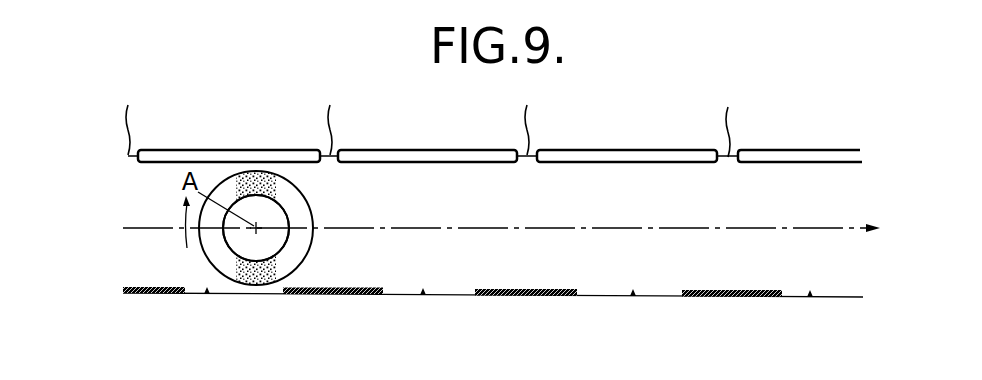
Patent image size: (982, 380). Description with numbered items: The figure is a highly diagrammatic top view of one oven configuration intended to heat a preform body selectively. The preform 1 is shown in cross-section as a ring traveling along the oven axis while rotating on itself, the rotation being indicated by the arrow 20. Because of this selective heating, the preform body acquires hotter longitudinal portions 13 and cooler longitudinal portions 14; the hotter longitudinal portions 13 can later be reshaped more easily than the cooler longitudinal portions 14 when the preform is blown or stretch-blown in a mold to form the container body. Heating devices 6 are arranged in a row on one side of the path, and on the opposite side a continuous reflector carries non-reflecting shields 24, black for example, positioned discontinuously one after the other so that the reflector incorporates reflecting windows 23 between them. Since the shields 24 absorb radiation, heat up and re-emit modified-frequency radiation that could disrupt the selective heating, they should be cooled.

The roller 1 is at (305, 198).
The plate 6 is at (207, 150).
The hotter longitudinal portion 13 is at (253, 180).
The cooler longitudinal portion 14 is at (301, 217).
The arrow 20 is at (186, 213).
The reflecting window 23 is at (207, 295).
The non-reflecting shield 24 is at (130, 288).